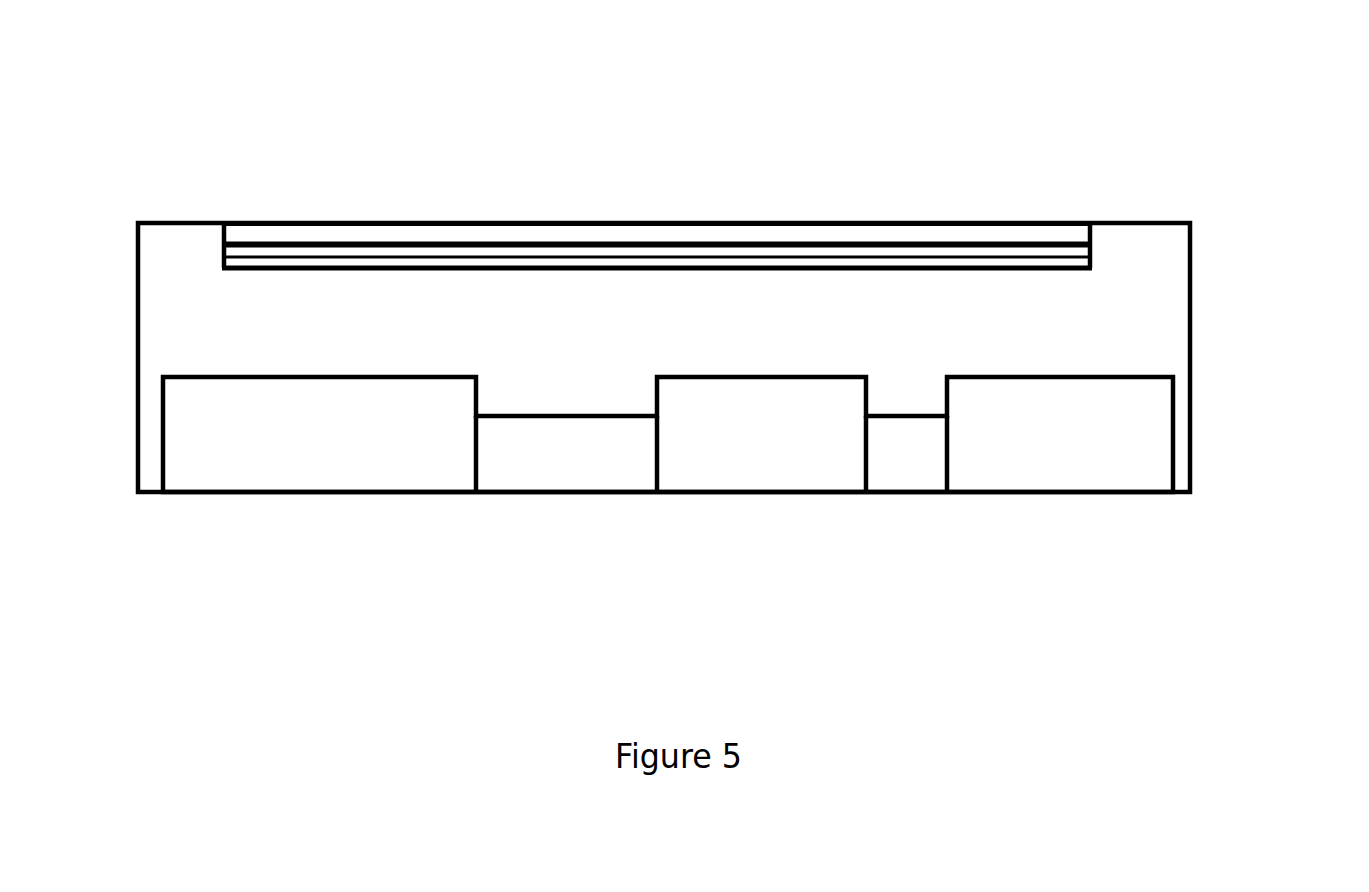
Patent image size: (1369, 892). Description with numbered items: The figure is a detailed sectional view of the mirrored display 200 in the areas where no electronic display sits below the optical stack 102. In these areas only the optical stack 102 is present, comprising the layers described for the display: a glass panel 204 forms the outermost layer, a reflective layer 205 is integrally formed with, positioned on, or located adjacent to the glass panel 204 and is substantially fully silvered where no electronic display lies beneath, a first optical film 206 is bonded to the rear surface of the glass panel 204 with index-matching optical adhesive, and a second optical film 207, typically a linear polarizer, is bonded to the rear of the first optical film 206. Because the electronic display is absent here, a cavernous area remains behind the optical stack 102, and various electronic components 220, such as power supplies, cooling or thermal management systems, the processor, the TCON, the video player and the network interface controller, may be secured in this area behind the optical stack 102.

The mirrored display 200 is at (138, 170).
The optical stack 102 is at (204, 245).
The glass panel 204 is at (1093, 232).
The reflective layer 205 is at (1093, 242).
The first optical film 206 is at (1093, 252).
The second optical film 207 is at (1093, 262).
The electronic components 220 is at (1060, 430).